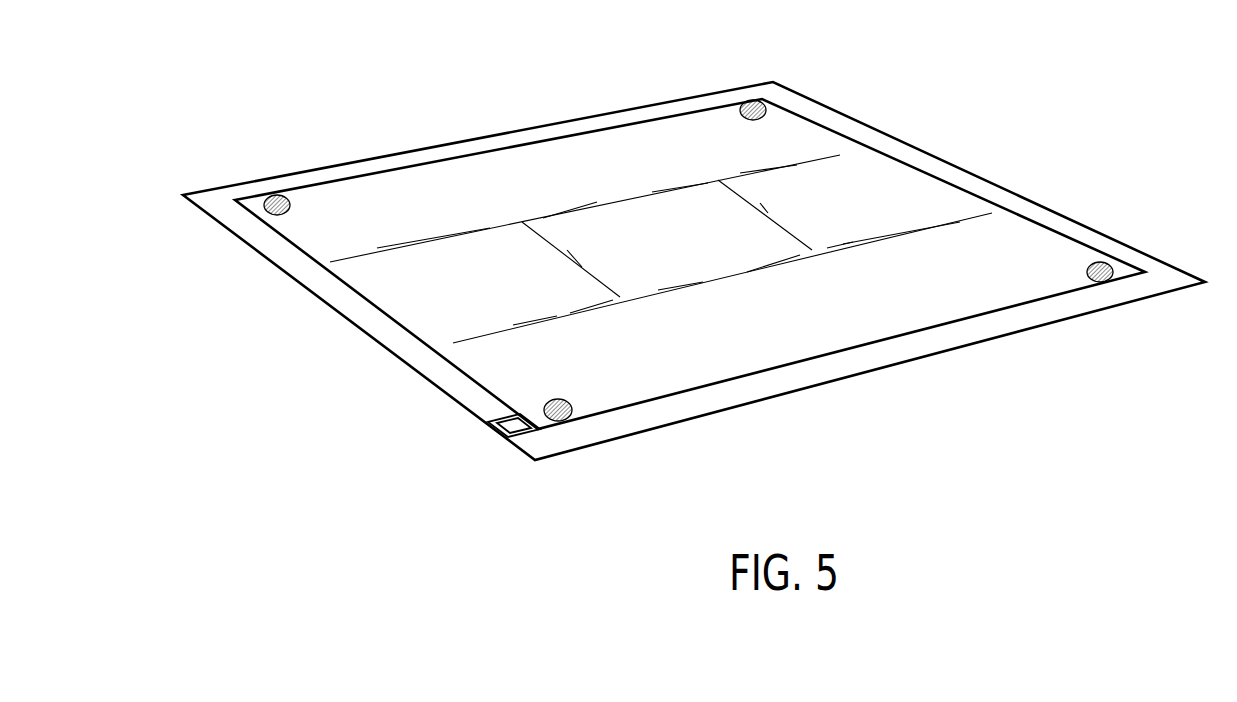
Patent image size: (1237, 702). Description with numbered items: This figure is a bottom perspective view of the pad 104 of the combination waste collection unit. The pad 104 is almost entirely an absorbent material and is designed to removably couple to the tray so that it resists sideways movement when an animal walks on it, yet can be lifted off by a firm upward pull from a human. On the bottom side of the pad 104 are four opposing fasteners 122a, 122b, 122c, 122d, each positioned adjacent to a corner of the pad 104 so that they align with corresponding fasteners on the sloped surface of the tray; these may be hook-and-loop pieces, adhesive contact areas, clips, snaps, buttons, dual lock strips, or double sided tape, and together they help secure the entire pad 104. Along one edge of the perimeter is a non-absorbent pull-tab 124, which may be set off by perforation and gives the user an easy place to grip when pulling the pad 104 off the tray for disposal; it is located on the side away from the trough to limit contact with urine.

The pad 104 is at (325, 121).
The opposing fastener 122a is at (1140, 278).
The opposing fastener 122b is at (755, 100).
The opposing fastener 122c is at (252, 207).
The opposing fastener 122d is at (486, 422).
The pull-tab 124 is at (512, 436).